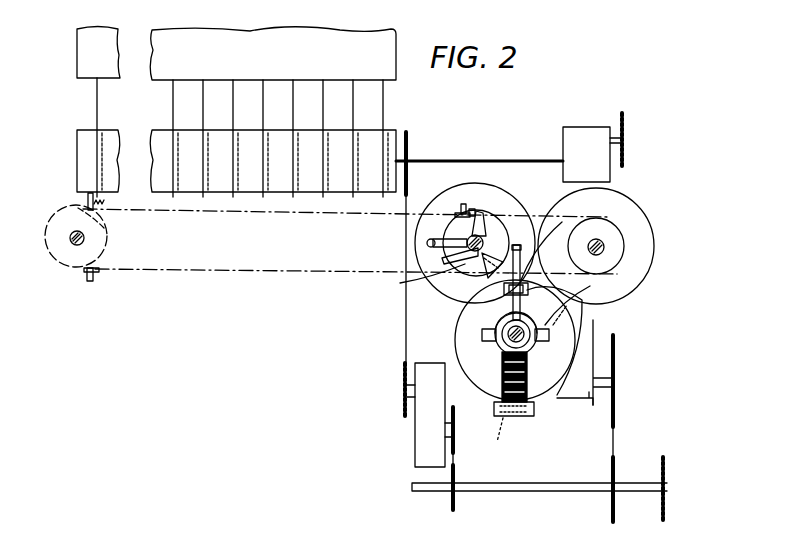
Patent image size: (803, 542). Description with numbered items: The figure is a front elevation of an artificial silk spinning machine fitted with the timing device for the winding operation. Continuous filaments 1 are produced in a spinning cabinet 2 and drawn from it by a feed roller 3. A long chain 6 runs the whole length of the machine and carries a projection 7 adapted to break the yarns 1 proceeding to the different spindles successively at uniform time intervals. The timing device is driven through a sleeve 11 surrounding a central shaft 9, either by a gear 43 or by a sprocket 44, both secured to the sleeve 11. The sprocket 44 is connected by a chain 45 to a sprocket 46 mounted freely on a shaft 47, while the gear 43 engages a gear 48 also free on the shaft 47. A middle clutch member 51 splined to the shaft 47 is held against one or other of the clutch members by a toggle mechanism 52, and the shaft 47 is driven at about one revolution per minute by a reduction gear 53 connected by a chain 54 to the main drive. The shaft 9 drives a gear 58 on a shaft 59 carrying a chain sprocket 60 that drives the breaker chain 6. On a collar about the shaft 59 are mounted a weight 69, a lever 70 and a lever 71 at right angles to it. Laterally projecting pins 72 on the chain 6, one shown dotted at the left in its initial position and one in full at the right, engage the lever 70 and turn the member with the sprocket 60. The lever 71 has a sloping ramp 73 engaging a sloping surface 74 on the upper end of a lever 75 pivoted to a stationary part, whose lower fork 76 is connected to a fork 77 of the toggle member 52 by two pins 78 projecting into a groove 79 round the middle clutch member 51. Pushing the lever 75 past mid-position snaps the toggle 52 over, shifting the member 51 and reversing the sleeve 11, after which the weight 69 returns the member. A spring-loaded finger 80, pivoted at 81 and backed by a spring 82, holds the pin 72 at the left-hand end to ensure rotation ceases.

The continuous filaments 1 is at (98, 113).
The spinning cabinet 2 is at (108, 45).
The feed roller 3 is at (120, 138).
The chain 6 is at (397, 211).
The projection 7 is at (92, 280).
The central shaft 9 is at (605, 249).
The sleeve 11 is at (606, 243).
The gear 43 is at (636, 208).
The sprocket 44 is at (620, 258).
The chain 45 is at (607, 307).
The sprocket 46 is at (490, 321).
The shaft 47 is at (490, 352).
The gear 48 is at (553, 400).
The middle clutch member 51 is at (534, 350).
The toggle mechanism 52 is at (500, 394).
The reduction gear 53 is at (596, 376).
The chain 54 is at (613, 446).
The gear 58 is at (460, 183).
The shaft 59 is at (459, 259).
The chain sprocket 60 is at (493, 216).
The weight 69 is at (400, 283).
The lever 70 is at (486, 228).
The lever 71 is at (424, 249).
The pins 72 is at (102, 227).
The sloping ramp 73 is at (427, 243).
The sloping surface 74 is at (517, 244).
The lever 75 is at (540, 241).
The fork 76 is at (547, 290).
The fork 77 is at (566, 355).
The pins 78 is at (474, 302).
The groove 79 is at (528, 313).
The spring-loaded finger 80 is at (87, 199).
The pivot 81 is at (89, 193).
The spring 82 is at (104, 203).